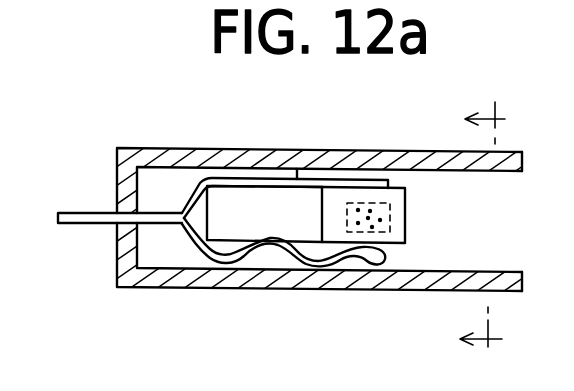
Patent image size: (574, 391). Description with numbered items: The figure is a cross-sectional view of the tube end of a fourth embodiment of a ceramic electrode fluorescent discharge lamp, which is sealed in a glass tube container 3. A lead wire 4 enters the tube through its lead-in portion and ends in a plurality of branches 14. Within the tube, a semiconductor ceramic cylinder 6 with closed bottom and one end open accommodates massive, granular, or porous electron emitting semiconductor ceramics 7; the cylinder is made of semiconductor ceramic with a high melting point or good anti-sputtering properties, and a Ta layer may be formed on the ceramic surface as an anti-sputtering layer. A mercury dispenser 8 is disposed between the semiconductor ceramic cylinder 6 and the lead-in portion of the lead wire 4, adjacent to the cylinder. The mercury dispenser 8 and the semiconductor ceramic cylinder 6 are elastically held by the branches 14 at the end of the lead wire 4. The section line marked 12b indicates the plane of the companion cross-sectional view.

The glass tube container 3 is at (405, 152).
The lead wire 4 is at (72, 228).
The semiconductor ceramic cylinder with closed bottom 6 is at (395, 262).
The electron emitting semiconductor ceramics 7 is at (380, 220).
The mercury dispenser 8 is at (242, 210).
The branches 14 is at (298, 178).
The section line 12b is at (468, 230).